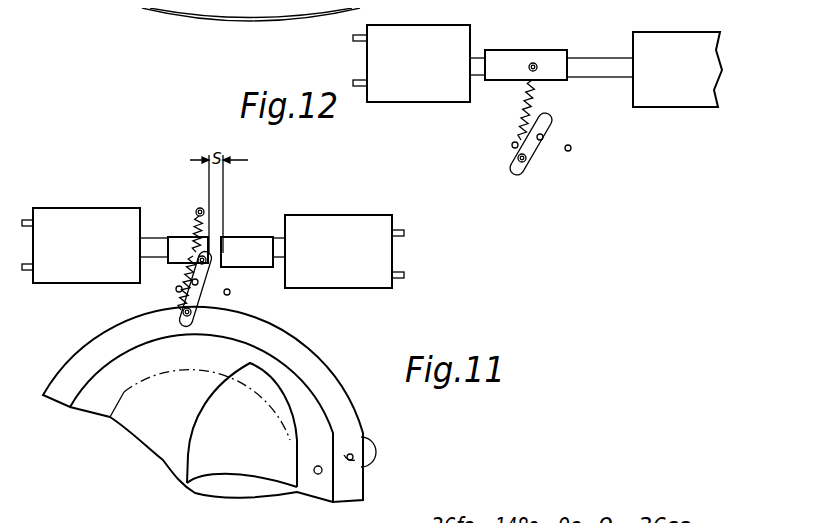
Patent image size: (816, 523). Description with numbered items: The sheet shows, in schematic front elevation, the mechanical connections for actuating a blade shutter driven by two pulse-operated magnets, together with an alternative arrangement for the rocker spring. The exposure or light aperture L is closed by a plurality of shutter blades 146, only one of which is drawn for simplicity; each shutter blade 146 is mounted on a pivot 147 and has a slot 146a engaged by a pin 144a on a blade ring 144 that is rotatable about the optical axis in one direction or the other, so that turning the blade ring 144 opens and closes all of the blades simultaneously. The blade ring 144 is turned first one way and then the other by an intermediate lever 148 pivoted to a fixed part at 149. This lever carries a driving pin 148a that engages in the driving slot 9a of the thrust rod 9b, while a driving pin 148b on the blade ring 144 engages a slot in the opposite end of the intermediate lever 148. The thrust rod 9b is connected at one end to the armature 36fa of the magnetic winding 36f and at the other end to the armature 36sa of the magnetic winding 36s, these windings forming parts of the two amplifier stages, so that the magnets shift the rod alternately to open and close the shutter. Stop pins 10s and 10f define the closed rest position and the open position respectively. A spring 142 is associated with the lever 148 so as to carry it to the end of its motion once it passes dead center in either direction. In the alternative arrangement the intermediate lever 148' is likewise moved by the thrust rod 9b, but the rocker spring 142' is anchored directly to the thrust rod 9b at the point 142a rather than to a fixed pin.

In FIG. 12, the magnetic winding 36f is at (411, 63).
In FIG. 11, the magnetic winding 36f is at (81, 245).
In FIG. 12, the armature 36fa is at (477, 57).
In FIG. 11, the armature 36fa is at (151, 236).
In FIG. 12, the magnetic winding 36s is at (677, 69).
In FIG. 11, the magnetic winding 36s is at (344, 251).
In FIG. 12, the armature 36sa is at (607, 62).
In FIG. 11, the armature 36sa is at (279, 240).
In FIG. 11, the driving slot 9a is at (222, 260).
In FIG. 12, the driving rod 9b is at (557, 77).
In FIG. 11, the driving rod 9b is at (255, 247).
In FIG. 11, the spring 142 is at (186, 216).
In FIG. 12, the anchor point 142a is at (534, 63).
In FIG. 12, the rocker spring 142' is at (498, 110).
In FIG. 11, the intermediate lever 148 is at (224, 289).
In FIG. 12, the intermediate lever 148' is at (565, 143).
In FIG. 11, the driving pin 148a is at (193, 267).
In FIG. 12, the driving pin 148b is at (517, 167).
In FIG. 11, the driving pin 148b is at (186, 316).
In FIG. 12, the pivot 149 is at (545, 141).
In FIG. 11, the pivot 149 is at (200, 288).
In FIG. 12, the stop pin 10s is at (513, 144).
In FIG. 11, the stop pin 10s is at (176, 290).
In FIG. 12, the stop pin 10f is at (572, 148).
In FIG. 11, the stop pin 10f is at (231, 293).
In FIG. 11, the blade ring 144 is at (317, 371).
In FIG. 11, the pin 144a is at (337, 490).
In FIG. 11, the shutter blade 146 is at (193, 430).
In FIG. 11, the slot 146a is at (333, 435).
In FIG. 11, the pivot 147 is at (318, 466).
In FIG. 11, the light aperture L is at (121, 385).